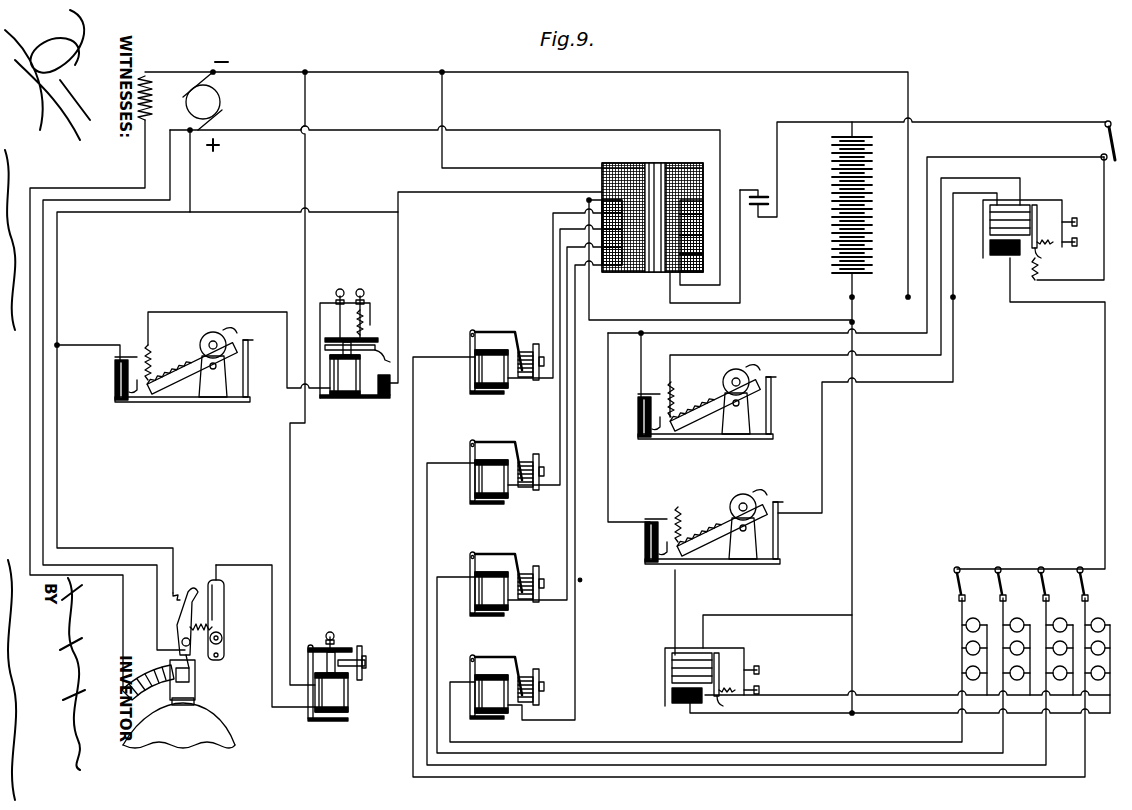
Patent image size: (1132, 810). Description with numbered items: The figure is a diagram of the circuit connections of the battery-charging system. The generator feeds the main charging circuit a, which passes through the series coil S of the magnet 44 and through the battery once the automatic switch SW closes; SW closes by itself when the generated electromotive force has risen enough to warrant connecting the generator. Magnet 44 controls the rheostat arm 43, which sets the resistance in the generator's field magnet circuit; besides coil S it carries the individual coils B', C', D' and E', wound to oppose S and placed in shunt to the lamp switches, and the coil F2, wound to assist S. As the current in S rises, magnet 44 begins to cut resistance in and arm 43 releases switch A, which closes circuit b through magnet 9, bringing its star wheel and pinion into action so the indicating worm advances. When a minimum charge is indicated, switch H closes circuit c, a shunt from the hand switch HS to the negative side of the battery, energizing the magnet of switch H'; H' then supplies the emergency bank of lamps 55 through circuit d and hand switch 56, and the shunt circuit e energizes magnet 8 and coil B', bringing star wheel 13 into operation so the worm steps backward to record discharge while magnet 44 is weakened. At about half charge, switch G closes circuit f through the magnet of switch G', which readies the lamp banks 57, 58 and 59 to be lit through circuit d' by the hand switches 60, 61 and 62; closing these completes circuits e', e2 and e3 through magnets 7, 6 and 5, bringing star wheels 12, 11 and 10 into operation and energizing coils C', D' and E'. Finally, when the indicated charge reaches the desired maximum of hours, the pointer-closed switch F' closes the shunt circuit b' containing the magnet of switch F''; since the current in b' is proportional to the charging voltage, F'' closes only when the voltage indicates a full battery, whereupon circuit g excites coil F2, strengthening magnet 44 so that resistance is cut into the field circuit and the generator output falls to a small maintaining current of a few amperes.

The circuit a is at (526, 174).
The circuit g is at (487, 167).
The circuit b is at (175, 380).
The circuit b' is at (193, 336).
The circuit c is at (956, 252).
The circuit d is at (900, 500).
The circuit d' is at (907, 706).
The shunt circuit e is at (758, 488).
The circuit e' is at (749, 496).
The circuit e2 is at (735, 501).
The circuit e3 is at (721, 511).
The circuit f is at (961, 352).
The automatic switch SW is at (760, 192).
The hand switch HS is at (1089, 140).
The magnet 44 is at (652, 163).
The series coil S is at (688, 200).
The coil F2 is at (730, 188).
The coil B' is at (702, 201).
The coil C' is at (702, 225).
The coil D' is at (703, 243).
The coil E' is at (702, 263).
The switch F' is at (184, 382).
The relay F'' is at (355, 363).
The switch H is at (707, 420).
The switch G is at (714, 545).
The switch H' is at (1023, 243).
The switch G' is at (724, 671).
The magnet 8 is at (496, 362).
The star wheel 13 is at (535, 345).
The magnet 7 is at (483, 455).
The star wheel 12 is at (535, 452).
The magnet 6 is at (496, 584).
The star wheel 11 is at (537, 568).
The magnet 5 is at (496, 687).
The star wheel 10 is at (538, 675).
The magnet 9 is at (337, 676).
The switch A is at (225, 627).
The rheostat arm 43 is at (195, 688).
The hand switch 62 is at (948, 582).
The hand switch 61 is at (995, 585).
The hand switch 60 is at (1038, 585).
The hand switch 56 is at (1088, 585).
The bank of lamps 59 is at (962, 635).
The bank of lamps 58 is at (1003, 628).
The bank of lamps 57 is at (1046, 640).
The emergency bank of lamps 55 is at (1105, 678).